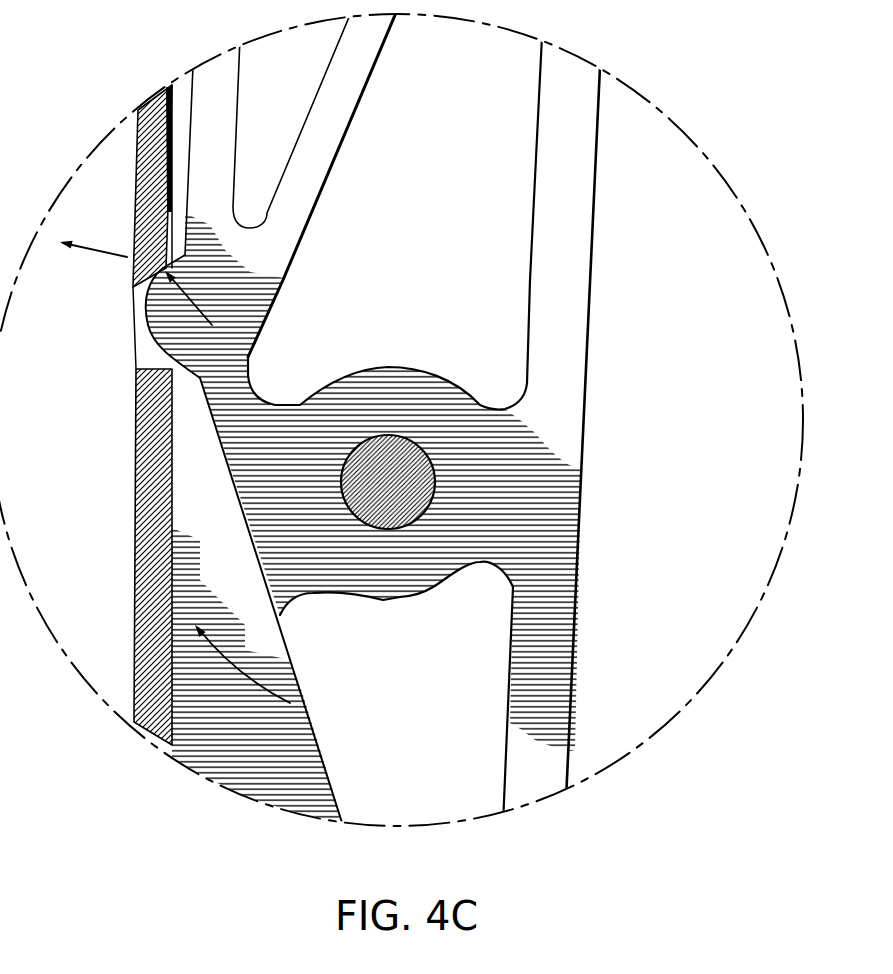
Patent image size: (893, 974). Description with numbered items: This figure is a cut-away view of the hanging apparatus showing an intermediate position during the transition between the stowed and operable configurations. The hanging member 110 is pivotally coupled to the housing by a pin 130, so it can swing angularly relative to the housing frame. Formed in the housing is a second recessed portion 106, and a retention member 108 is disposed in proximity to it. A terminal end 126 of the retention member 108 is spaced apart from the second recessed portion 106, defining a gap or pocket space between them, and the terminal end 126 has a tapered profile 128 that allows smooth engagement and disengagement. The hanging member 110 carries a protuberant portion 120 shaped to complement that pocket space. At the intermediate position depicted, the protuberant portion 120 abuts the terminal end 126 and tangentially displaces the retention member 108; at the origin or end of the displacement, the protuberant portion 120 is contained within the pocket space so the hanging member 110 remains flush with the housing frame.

The second recessed portion 106 is at (165, 727).
The retention member 108 is at (145, 142).
The hanging member 110 is at (580, 87).
The protuberant portion 120 is at (153, 320).
The terminal end 126 is at (148, 285).
The tapered profile 128 is at (160, 268).
The pin 130 is at (412, 455).